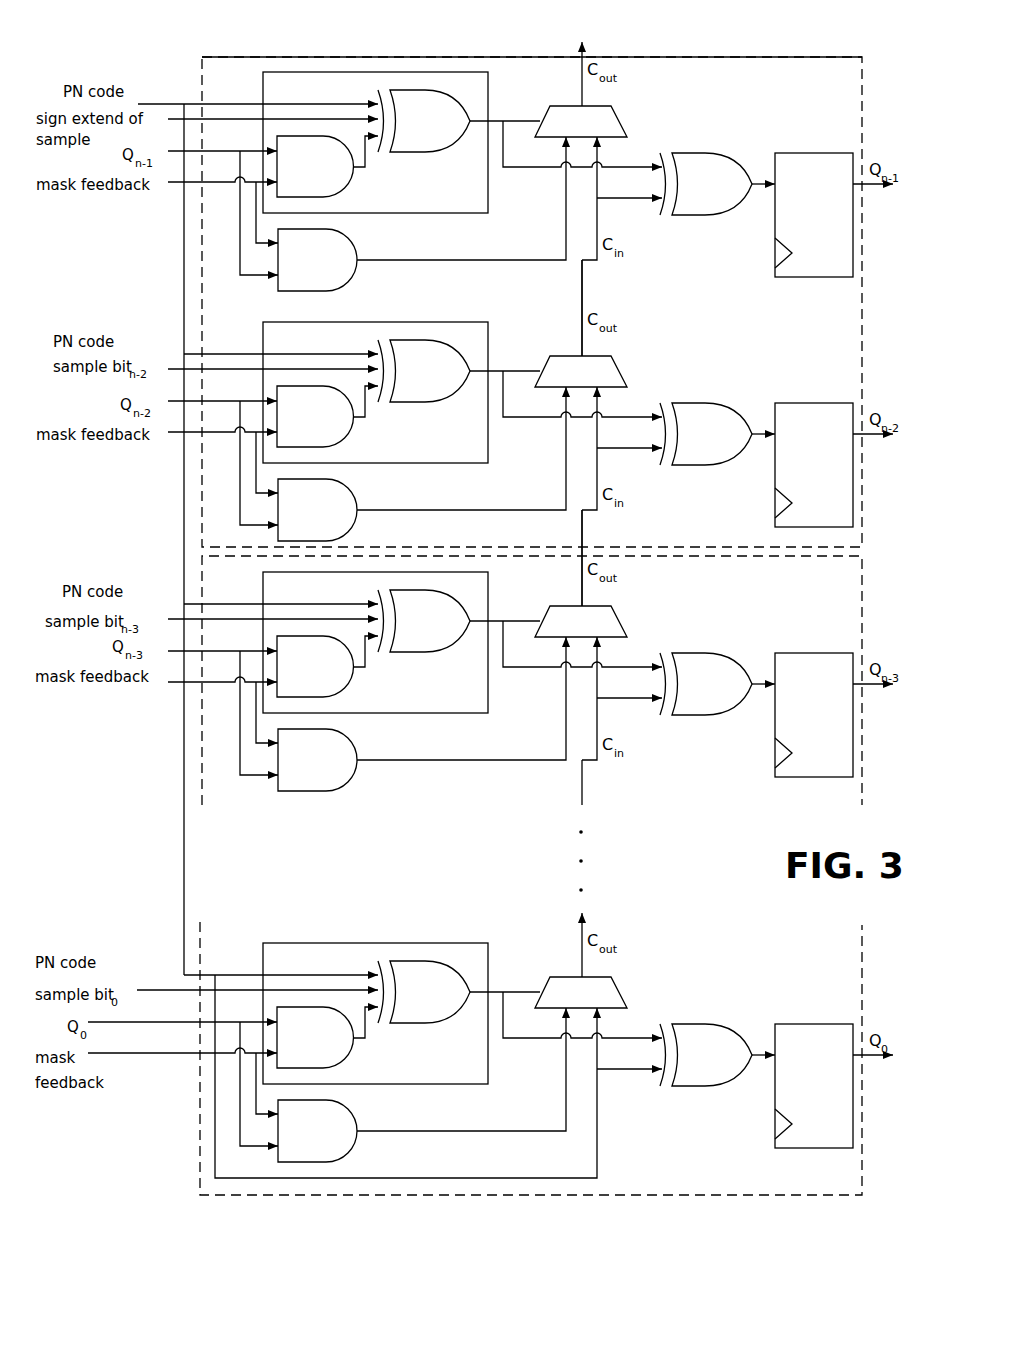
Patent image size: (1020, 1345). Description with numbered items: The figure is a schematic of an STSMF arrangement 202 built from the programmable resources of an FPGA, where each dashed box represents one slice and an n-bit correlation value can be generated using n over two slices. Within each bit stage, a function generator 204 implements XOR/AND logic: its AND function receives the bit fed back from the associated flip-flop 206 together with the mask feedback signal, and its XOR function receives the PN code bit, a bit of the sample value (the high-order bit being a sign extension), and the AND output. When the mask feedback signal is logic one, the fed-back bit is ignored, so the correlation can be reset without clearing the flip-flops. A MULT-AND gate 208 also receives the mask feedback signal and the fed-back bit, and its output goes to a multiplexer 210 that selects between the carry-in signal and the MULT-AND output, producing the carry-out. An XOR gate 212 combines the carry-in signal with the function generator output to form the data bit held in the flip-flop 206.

The STSMF arrangement 202 is at (152, 43).
The function generator 204 is at (489, 82).
The flip-flop 206 is at (789, 152).
The MULT-AND gate 208 is at (348, 244).
The multiplexer 210 is at (620, 115).
The XOR gate 212 is at (680, 152).